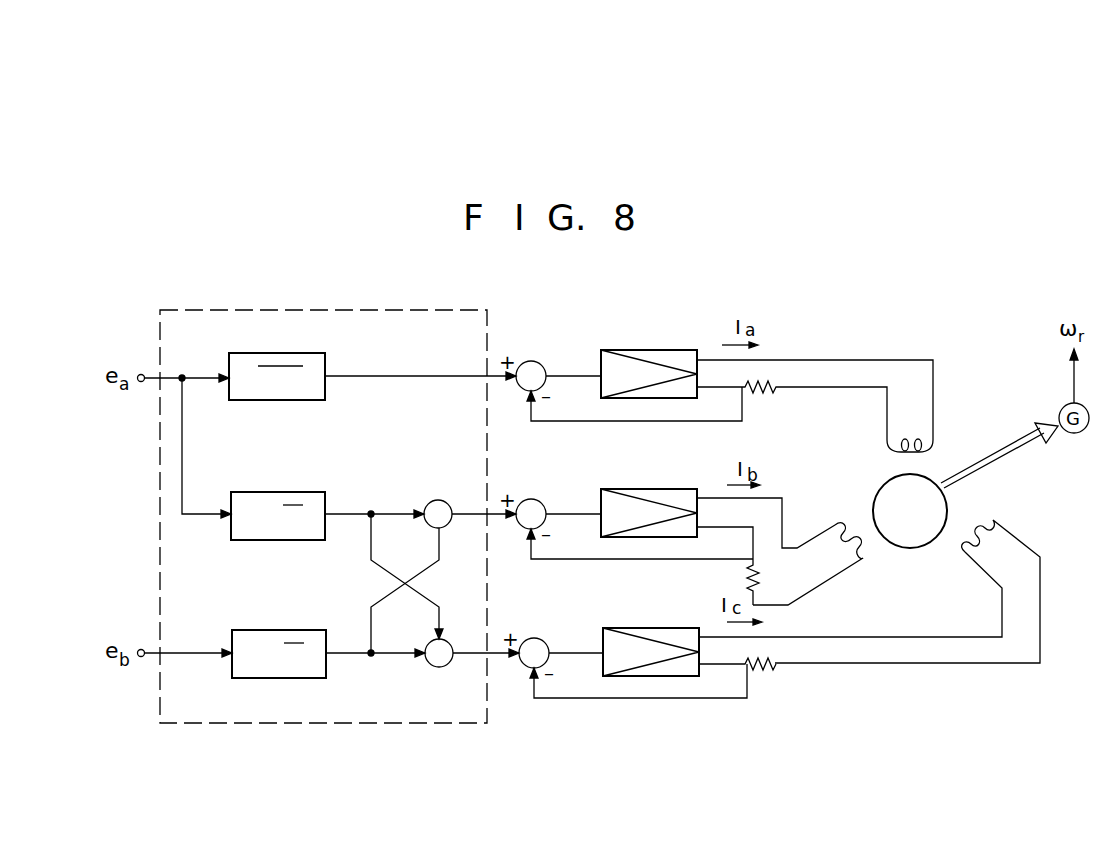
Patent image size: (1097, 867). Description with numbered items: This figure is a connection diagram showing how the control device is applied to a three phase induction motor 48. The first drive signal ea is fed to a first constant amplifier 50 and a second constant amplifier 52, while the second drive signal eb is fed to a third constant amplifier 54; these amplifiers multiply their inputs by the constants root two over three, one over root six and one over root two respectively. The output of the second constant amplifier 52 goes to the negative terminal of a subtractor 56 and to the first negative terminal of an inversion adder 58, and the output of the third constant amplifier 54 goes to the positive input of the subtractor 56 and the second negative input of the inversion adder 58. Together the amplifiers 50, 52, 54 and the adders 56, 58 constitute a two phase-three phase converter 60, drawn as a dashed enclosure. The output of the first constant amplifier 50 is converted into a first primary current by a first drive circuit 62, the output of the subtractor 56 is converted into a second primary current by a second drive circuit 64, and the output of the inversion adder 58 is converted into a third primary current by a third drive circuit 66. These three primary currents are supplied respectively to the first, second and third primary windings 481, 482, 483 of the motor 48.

The three phase induction motor 48 is at (950, 498).
The first primary winding 481 is at (934, 424).
The second primary winding 482 is at (818, 521).
The third primary winding 483 is at (1018, 535).
The first constant amplifier 50 is at (285, 352).
The second constant amplifier 52 is at (282, 491).
The third constant amplifier 54 is at (283, 629).
The subtractor 56 is at (440, 500).
The inversion adder 58 is at (449, 664).
The two phase-three phase converter 60 is at (409, 705).
The first drive circuit 62 is at (682, 338).
The second drive circuit 64 is at (686, 475).
The third drive circuit 66 is at (688, 616).